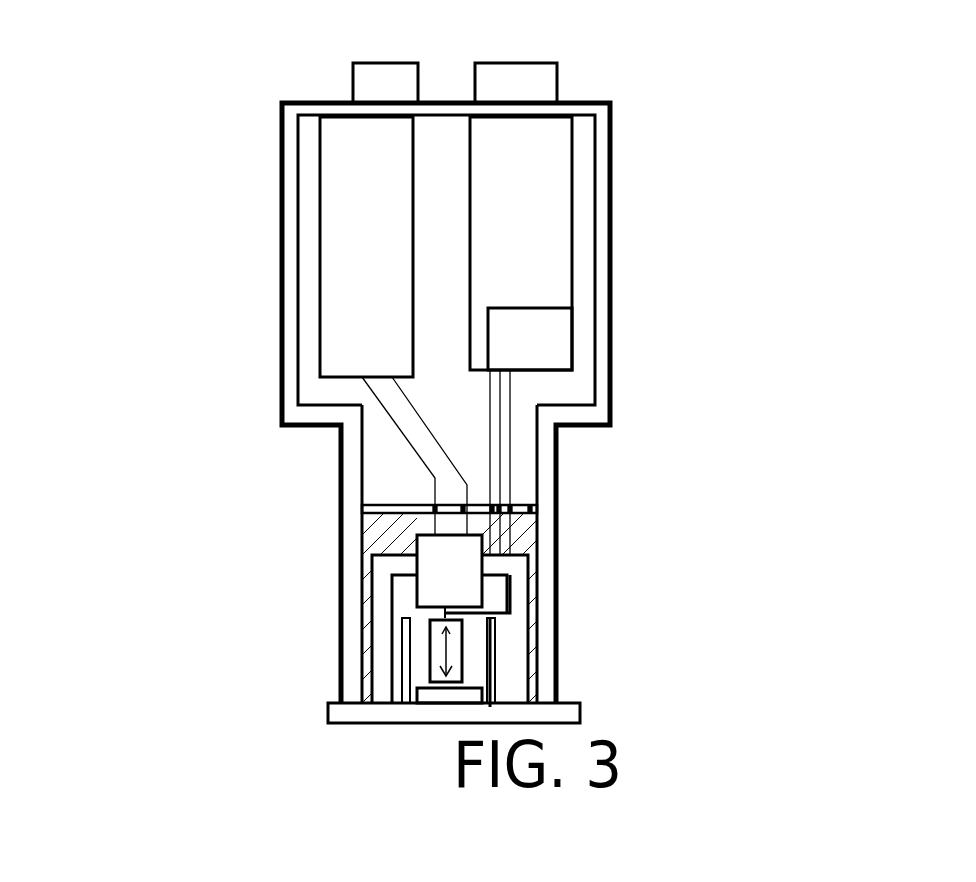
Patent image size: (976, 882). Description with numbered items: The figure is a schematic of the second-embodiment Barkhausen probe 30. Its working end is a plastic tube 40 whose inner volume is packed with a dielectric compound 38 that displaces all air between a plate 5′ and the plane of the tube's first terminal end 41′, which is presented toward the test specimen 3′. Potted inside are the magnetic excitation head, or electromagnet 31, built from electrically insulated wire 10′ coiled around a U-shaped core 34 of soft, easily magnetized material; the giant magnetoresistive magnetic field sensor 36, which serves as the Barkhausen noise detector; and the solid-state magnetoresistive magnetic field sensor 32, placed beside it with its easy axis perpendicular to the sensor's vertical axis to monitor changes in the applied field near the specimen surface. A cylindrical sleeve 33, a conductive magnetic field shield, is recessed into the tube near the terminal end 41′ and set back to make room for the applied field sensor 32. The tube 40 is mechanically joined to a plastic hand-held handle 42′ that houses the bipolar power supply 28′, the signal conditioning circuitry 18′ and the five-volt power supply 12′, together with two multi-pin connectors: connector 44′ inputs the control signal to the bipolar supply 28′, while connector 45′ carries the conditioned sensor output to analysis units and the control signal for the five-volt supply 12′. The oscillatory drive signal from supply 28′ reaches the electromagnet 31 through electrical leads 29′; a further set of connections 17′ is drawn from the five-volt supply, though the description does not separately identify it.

The Barkhausen probe 30 is at (456, 56).
The multi-pin connector 44′ is at (358, 78).
The multi-pin connector 45′ is at (563, 83).
The bipolar power supply 28′ is at (373, 275).
The signal conditioning circuitry 18′ is at (563, 152).
The 5 volt power supply 12′ is at (563, 322).
The plastic hand held handle 42′ is at (283, 348).
The electrical leads 29′ is at (418, 443).
The electronics wires 17′ is at (498, 452).
The electrically insulated wire 10′ is at (402, 550).
The plate 5′ is at (400, 503).
The plastic tube 40 is at (557, 548).
The magnetic excitation head 31 is at (373, 610).
The U-shaped core 34 is at (523, 598).
The dielectric compound 38 is at (402, 610).
The cylindrical sleeve 33 is at (503, 653).
The magnetoresistive magnetic field sensor 32 is at (430, 663).
The giant magnetoresistive magnetic field sensor 36 is at (465, 697).
The test specimen 3′ is at (583, 708).
The first terminal end 41′ is at (385, 703).